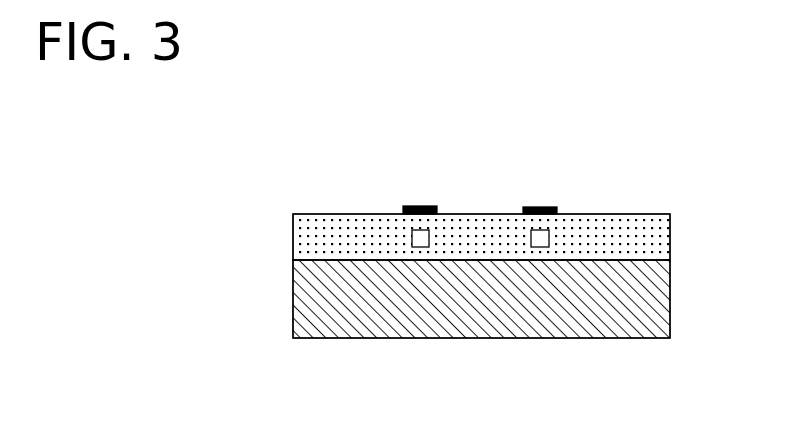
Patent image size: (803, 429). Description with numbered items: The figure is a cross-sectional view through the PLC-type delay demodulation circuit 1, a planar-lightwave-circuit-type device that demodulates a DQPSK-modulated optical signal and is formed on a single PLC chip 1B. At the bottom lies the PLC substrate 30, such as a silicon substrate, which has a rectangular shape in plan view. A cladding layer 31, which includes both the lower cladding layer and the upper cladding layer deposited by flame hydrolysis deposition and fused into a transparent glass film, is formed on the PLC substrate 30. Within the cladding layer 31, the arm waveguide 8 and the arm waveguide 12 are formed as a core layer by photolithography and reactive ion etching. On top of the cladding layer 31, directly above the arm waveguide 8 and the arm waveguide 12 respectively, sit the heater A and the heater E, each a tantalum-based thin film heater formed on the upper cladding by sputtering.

The PLC-type delay demodulation circuit 1 is at (316, 180).
The PLC chip 1B is at (278, 255).
The arm waveguide 8 is at (426, 240).
The arm waveguide 12 is at (551, 238).
The PLC substrate 30 is at (583, 323).
The cladding layer 31 is at (665, 242).
The heater A is at (414, 204).
The heater E is at (536, 206).